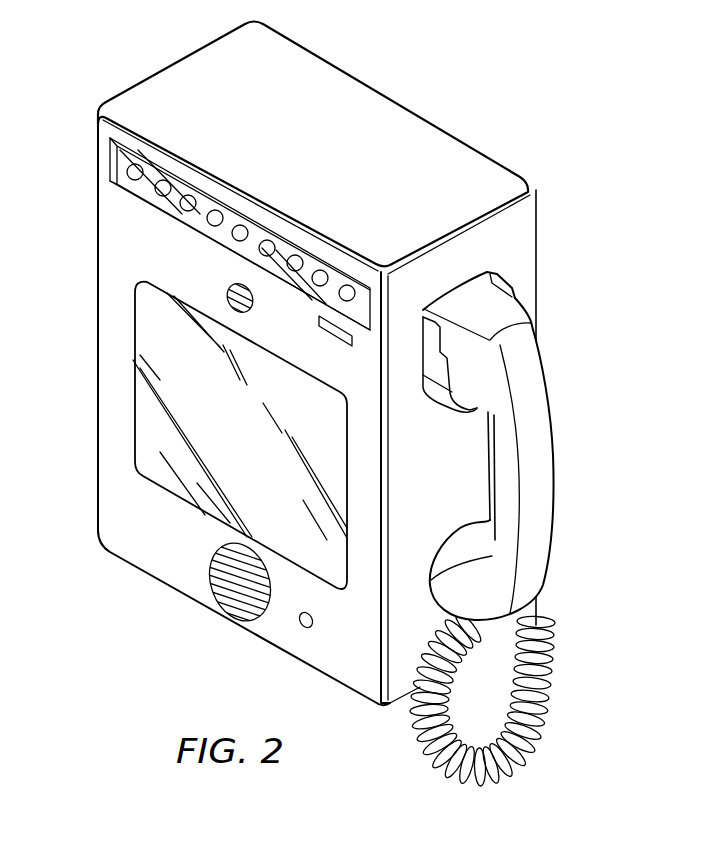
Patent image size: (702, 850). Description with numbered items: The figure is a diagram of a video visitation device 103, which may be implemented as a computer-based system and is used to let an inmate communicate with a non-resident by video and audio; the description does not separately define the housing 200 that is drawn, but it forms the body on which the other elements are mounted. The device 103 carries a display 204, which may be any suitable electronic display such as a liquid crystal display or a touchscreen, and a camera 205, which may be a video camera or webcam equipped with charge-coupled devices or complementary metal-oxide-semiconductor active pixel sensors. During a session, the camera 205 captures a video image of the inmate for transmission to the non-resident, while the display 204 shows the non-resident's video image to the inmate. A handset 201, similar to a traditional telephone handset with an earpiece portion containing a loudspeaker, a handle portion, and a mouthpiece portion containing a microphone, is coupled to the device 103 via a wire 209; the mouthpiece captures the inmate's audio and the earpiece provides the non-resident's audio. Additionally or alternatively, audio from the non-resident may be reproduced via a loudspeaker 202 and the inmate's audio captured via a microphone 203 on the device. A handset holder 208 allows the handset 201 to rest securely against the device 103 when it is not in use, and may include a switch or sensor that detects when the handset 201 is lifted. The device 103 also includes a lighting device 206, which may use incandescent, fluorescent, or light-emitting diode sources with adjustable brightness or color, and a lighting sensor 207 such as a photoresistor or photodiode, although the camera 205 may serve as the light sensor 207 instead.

The video visitation device 103 is at (408, 80).
The housing 200 is at (98, 517).
The handset 201 is at (556, 480).
The loudspeaker 202 is at (213, 590).
The microphone 203 is at (303, 630).
The display 204 is at (140, 432).
The camera 205 is at (232, 312).
The lighting device 206 is at (110, 152).
The lighting sensor 207 is at (333, 336).
The handset holder 208 is at (452, 408).
The wire 209 is at (550, 698).